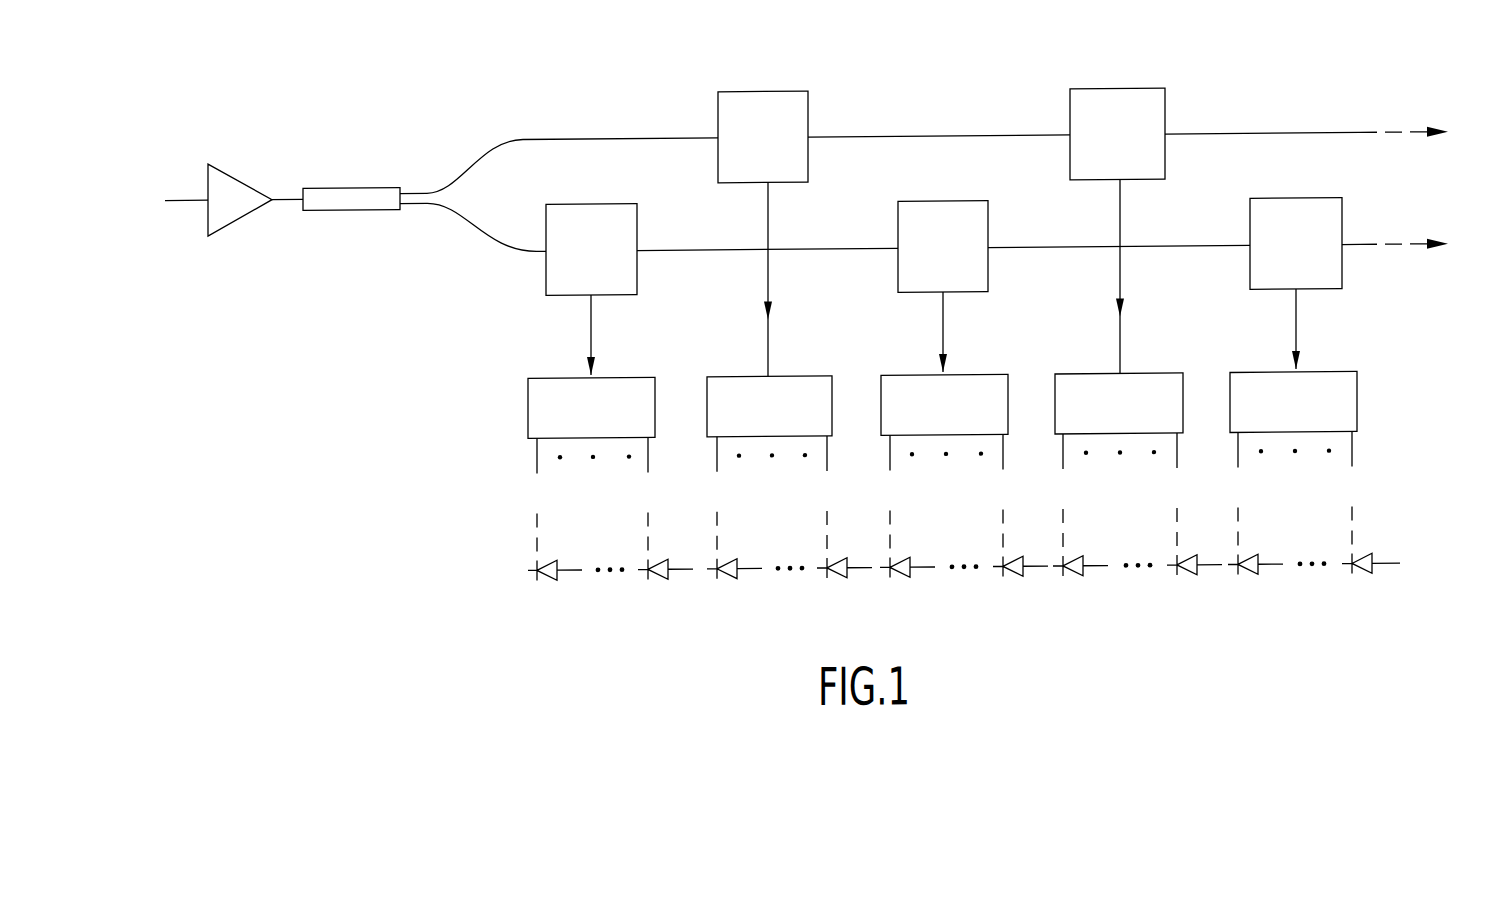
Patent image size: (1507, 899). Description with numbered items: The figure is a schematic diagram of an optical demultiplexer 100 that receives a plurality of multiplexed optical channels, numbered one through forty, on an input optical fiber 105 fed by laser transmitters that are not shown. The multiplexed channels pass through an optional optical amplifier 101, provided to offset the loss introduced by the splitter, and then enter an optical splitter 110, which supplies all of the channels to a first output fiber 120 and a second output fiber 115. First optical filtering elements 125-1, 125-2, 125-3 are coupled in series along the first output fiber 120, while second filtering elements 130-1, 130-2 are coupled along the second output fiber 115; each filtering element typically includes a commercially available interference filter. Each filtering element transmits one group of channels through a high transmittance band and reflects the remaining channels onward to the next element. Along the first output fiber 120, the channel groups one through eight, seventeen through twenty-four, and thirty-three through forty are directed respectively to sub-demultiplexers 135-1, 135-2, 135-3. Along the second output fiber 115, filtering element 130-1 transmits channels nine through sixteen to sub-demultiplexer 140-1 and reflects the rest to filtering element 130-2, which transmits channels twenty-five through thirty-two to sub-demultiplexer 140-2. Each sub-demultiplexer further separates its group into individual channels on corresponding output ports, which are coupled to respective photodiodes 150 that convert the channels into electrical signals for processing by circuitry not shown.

The optical demultiplexer 100 is at (312, 416).
The optical amplifier 101 is at (237, 171).
The input optical fiber 105 is at (290, 200).
The optical splitter 110 is at (347, 185).
The second output fiber 115 is at (527, 138).
The first output fiber 120 is at (460, 236).
The first optical filtering element 125-1 is at (546, 267).
The first optical filtering element 125-2 is at (912, 294).
The first optical filtering element 125-3 is at (1308, 294).
The second filtering element 130-1 is at (760, 92).
The second filtering element 130-2 is at (1112, 92).
The sub-demultiplexer 135-1 is at (528, 405).
The sub-demultiplexer 135-2 is at (957, 377).
The sub-demultiplexer 135-3 is at (1357, 402).
The sub-demultiplexer 140-1 is at (743, 377).
The sub-demultiplexer 140-2 is at (1142, 377).
The photodiodes 150 is at (522, 597).